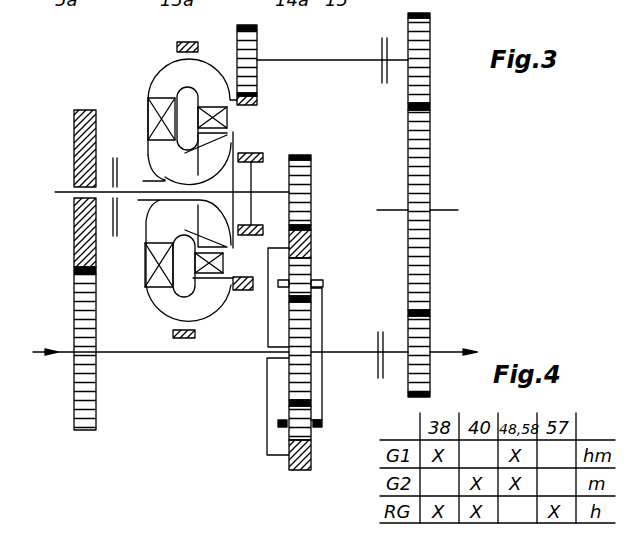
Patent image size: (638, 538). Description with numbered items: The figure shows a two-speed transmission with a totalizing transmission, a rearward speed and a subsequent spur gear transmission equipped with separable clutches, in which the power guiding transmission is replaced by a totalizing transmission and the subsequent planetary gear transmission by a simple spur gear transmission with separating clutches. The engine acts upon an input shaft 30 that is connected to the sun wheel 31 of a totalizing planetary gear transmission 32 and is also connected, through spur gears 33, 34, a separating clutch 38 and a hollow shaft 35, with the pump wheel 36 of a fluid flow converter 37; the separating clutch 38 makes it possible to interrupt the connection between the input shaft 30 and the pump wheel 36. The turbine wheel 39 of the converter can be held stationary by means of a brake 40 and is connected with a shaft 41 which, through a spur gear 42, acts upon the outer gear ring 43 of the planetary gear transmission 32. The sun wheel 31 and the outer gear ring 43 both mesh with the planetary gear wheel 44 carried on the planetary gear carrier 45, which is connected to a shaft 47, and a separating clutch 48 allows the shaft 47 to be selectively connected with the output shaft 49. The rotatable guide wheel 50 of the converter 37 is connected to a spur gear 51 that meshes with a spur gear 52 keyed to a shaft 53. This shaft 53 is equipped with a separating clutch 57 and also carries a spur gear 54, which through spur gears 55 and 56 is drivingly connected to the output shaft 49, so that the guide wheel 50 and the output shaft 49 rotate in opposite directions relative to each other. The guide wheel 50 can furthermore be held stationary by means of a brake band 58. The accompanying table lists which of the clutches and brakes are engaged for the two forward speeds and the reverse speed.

The input shaft 30 is at (42, 352).
The sun wheel 31 is at (290, 372).
The totalizing planetary gear transmission 32 is at (268, 434).
The spur gear 33 is at (80, 291).
The spur gear 34 is at (85, 156).
The hollow shaft 35 is at (130, 181).
The pump wheel 36 is at (210, 153).
The fluid flow converter 37 is at (157, 61).
The separating clutch 38 is at (113, 236).
The turbine wheel 39 is at (228, 127).
The brake 40 is at (257, 156).
The shaft 41 is at (62, 194).
The spur gear 42 is at (302, 196).
The outer gear ring 43 is at (312, 256).
The planetary gear wheel 44 is at (300, 286).
The planetary gear carrier 45 is at (325, 326).
The shaft 47 is at (360, 352).
The separating clutch 48 is at (381, 379).
The output shaft 49 is at (445, 356).
The rotatable guide wheel 50 is at (156, 114).
The spur gear 51 is at (256, 101).
The spur gear 52 is at (257, 52).
The shaft 53 is at (356, 60).
The spur gear 54 is at (424, 34).
The spur gear 55 is at (415, 205).
The spur gear 56 is at (423, 336).
The separating clutch 57 is at (383, 82).
The brake band 58 is at (196, 42).